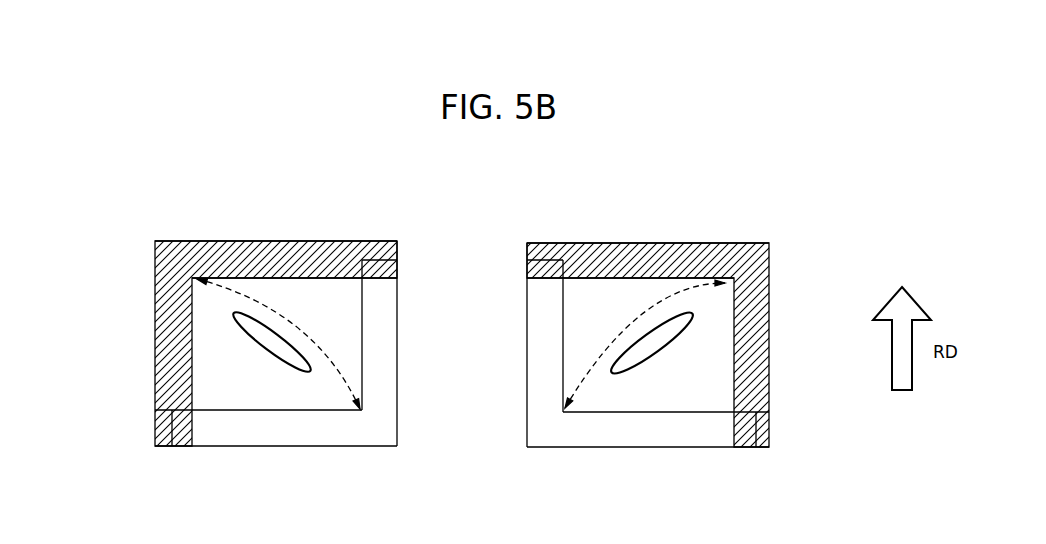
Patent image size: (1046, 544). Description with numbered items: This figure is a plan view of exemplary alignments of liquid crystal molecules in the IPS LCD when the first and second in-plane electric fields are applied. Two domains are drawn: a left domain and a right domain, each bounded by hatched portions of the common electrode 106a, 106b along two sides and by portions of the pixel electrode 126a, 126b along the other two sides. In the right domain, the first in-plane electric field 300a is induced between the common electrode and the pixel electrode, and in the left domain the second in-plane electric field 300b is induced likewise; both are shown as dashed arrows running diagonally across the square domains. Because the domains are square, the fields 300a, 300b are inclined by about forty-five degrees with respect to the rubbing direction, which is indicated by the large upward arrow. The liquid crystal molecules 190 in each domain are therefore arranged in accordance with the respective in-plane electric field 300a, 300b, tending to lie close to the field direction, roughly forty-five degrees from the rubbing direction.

The side wall of frame 106a is at (155, 352).
The top wall of frame 106b is at (283, 240).
The side border portion 126a is at (378, 318).
The bottom border portion 126b is at (275, 448).
The liquid crystal molecules 190 is at (273, 337).
The first in-plane electric field 300a is at (692, 290).
The second in-plane electric field 300b is at (235, 292).